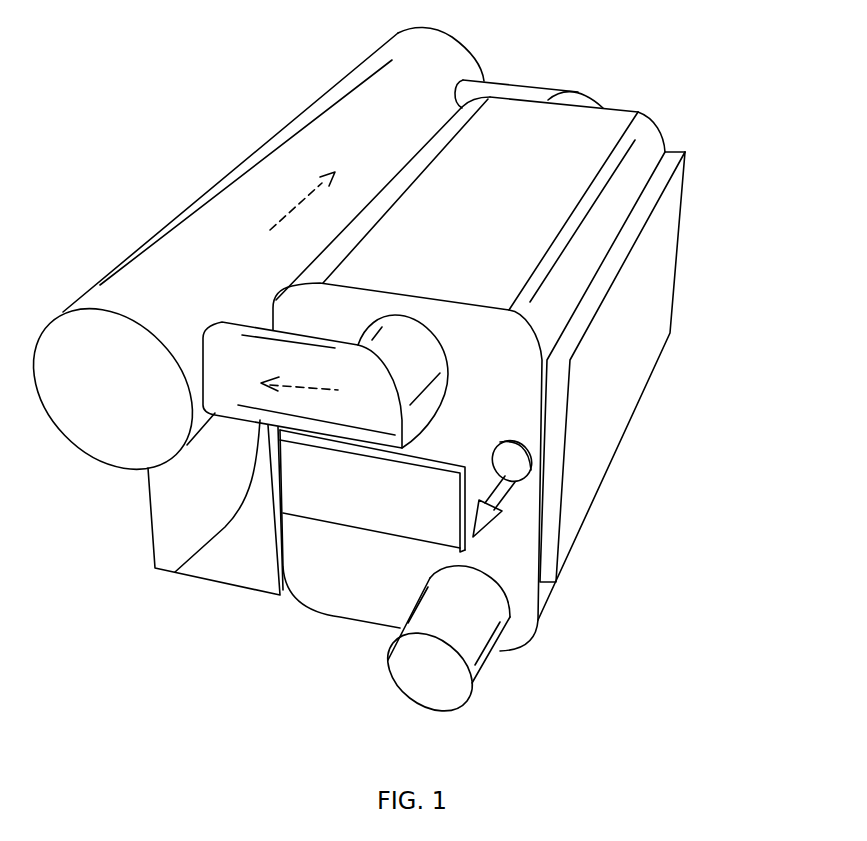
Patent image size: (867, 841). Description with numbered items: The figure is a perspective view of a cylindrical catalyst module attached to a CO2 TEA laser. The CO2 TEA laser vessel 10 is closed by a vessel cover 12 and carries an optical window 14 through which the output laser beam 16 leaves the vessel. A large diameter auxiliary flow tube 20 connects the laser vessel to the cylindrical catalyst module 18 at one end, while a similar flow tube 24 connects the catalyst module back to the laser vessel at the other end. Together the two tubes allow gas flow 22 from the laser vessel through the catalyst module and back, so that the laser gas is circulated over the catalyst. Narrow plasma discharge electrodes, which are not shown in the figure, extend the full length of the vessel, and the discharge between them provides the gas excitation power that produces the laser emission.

The CO2 TEA laser vessel 10 is at (655, 130).
The vessel cover 12 is at (650, 300).
The optical window 14 is at (531, 466).
The output laser beam 16 is at (548, 492).
The cylindrical catalyst module 18 is at (203, 250).
The auxiliary flow tube 20 is at (175, 572).
The gas flow 22 is at (307, 188).
The flow tube 24 is at (537, 82).